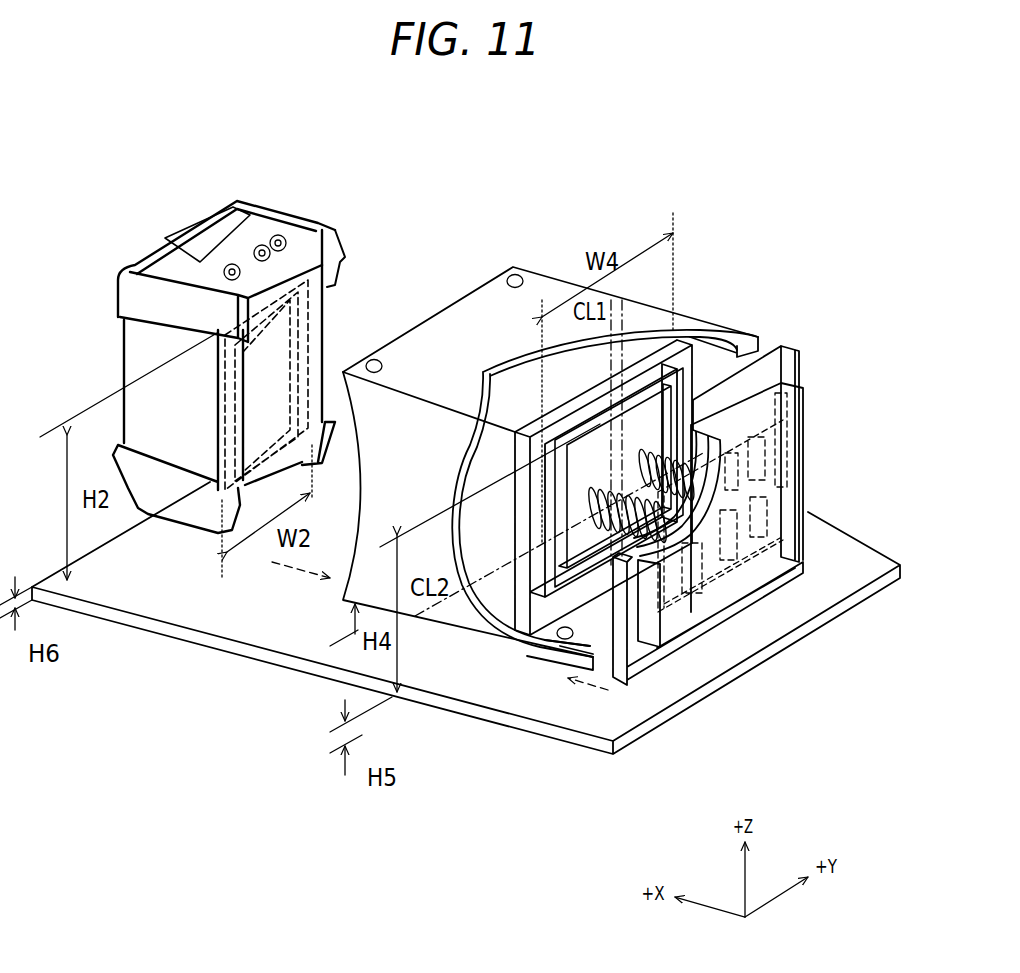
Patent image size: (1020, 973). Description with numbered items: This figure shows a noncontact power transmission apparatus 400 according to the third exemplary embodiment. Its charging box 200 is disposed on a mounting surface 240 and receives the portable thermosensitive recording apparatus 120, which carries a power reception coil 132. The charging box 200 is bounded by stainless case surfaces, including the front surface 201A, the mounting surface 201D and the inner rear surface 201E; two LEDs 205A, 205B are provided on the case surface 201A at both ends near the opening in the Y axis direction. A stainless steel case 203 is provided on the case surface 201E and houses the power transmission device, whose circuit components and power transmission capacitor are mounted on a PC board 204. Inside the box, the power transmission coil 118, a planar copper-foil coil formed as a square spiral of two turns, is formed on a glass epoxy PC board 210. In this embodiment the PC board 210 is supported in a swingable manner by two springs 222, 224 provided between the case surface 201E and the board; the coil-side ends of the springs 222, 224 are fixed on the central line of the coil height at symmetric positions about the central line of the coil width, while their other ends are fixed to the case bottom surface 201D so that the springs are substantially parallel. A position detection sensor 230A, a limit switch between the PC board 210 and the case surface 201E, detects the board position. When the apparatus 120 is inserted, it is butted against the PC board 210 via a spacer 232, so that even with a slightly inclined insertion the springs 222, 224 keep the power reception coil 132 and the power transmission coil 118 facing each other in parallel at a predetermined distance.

The portable thermosensitive recording apparatus 120 is at (275, 324).
The power reception coil 132 is at (338, 300).
The power transmission coil 118 is at (668, 410).
The charging box 200 is at (560, 413).
The case surface 201A is at (550, 260).
The case surface 201D is at (373, 623).
The case surface 201E is at (797, 343).
The case 203 is at (808, 424).
The PC board 204 is at (780, 470).
The LED 205A is at (375, 355).
The LED 205B is at (525, 270).
The PC board 210 is at (665, 336).
The spring 222 is at (690, 350).
The spring 224 is at (670, 475).
The position detection sensor 230A is at (543, 650).
The spacer 232 is at (665, 340).
The mounting surface 240 is at (100, 612).
The noncontact power transmission apparatus 400 is at (625, 160).